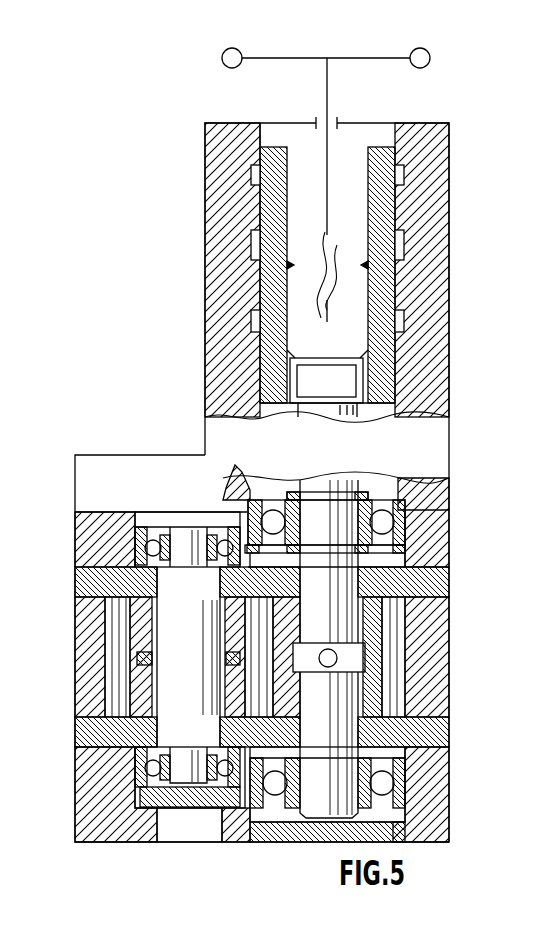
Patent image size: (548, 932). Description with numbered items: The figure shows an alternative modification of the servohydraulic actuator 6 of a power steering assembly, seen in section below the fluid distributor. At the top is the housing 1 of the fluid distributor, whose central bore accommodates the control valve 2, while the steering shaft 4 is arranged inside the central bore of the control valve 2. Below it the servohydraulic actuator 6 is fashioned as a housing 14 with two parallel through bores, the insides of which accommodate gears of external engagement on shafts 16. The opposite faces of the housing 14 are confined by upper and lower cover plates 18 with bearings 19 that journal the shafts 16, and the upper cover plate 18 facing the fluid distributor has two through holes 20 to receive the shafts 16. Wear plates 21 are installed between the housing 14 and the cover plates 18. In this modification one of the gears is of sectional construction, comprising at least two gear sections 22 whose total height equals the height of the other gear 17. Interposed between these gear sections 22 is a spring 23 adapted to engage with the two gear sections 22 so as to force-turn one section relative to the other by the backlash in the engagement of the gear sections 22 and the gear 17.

The housing 1 is at (443, 217).
The control valve 2 is at (371, 207).
The steering shaft 4 is at (327, 103).
The servohydraulic actuator 6 is at (103, 843).
The housing 14 is at (437, 672).
The shaft 16 is at (318, 485).
The gear of external engagement 17 is at (433, 607).
The cover plate 18 is at (87, 540).
The bearing 19 is at (237, 470).
The through hole 20 is at (409, 535).
The wear plate 21 is at (87, 587).
The gear section 22 is at (120, 665).
The spring 23 is at (227, 657).